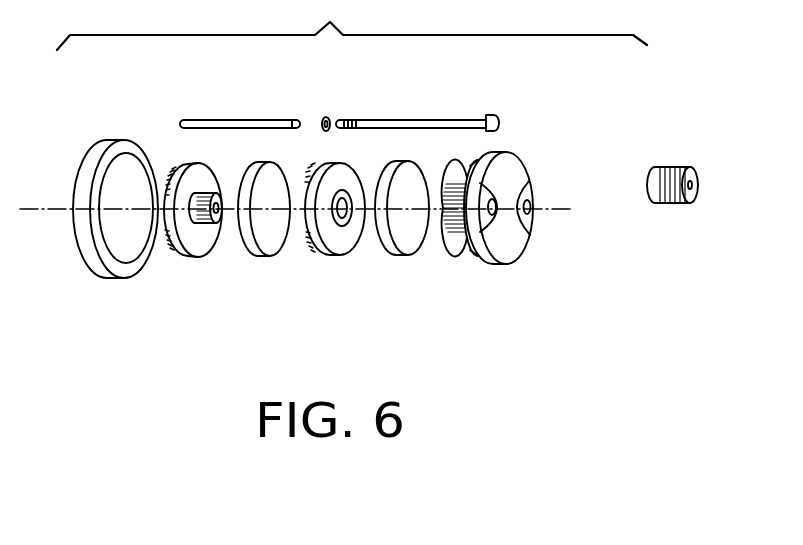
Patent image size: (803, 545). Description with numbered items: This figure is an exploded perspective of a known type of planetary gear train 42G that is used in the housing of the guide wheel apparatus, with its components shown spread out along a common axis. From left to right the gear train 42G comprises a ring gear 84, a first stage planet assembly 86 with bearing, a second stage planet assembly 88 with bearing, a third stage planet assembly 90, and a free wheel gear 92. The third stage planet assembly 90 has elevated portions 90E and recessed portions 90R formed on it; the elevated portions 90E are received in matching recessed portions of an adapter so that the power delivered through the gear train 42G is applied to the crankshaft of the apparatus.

The planetary gear train 42G is at (343, 371).
The ring gear 84 is at (83, 262).
The first stage planet assembly 86 is at (250, 160).
The second stage planet assembly 88 is at (392, 160).
The third stage planet assembly 90 is at (516, 216).
The elevated portions 90E is at (479, 255).
The recessed portions 90R is at (507, 228).
The free wheel gear 92 is at (675, 203).